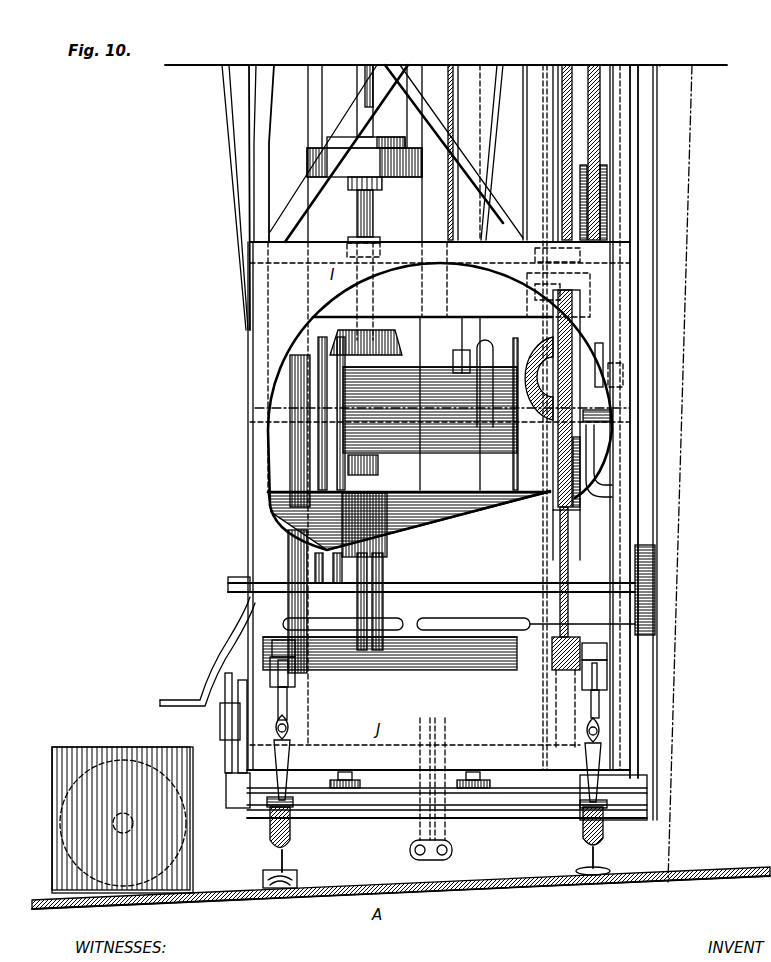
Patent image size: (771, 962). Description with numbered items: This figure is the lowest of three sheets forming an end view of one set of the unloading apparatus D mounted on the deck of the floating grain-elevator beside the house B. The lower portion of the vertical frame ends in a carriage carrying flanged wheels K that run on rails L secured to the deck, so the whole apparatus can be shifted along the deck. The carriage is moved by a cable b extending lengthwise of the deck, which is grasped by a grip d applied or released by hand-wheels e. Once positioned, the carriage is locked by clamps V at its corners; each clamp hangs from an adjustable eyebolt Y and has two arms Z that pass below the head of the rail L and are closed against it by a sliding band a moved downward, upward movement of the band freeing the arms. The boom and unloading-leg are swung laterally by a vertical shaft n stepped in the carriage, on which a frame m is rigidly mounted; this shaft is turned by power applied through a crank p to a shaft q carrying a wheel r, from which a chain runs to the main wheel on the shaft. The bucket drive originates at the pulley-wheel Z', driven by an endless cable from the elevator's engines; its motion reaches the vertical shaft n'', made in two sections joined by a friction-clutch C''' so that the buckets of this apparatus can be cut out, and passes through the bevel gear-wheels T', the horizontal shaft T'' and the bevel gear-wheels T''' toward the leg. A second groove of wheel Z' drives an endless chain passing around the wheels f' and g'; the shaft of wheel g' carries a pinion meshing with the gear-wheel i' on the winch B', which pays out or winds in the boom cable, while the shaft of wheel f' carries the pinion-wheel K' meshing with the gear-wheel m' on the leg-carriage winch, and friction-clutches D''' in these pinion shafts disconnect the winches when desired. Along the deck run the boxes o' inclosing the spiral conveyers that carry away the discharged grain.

The friction-clutch C''' is at (301, 167).
The vertical shaft n'' is at (373, 154).
The pinion-wheel K' is at (439, 152).
The pulley-wheel Z' is at (583, 143).
The house B is at (689, 473).
The unloading apparatus D is at (686, 202).
The bevel gear-wheels T''' is at (526, 353).
The bevel gear-wheels T' is at (371, 342).
The winch B' is at (430, 363).
The horizontal shaft T'' is at (418, 413).
The gear-wheel i' is at (294, 431).
The wheel g' is at (558, 520).
The vertical shaft n is at (370, 514).
The frame m is at (409, 521).
The gear-wheel m' is at (327, 601).
The wheel f' is at (575, 536).
The wheel r is at (656, 582).
The shaft q is at (445, 582).
The hand-wheels e is at (398, 618).
The crank p is at (222, 632).
The boxes o' is at (276, 765).
The friction-clutches D''' is at (390, 667).
The eyebolts Y is at (277, 698).
The clamps V is at (286, 756).
The sliding bands a is at (268, 808).
The arms Z is at (264, 838).
The flanged wheels K is at (406, 839).
The rails L is at (284, 858).
The grip d is at (440, 838).
The cable b is at (418, 856).